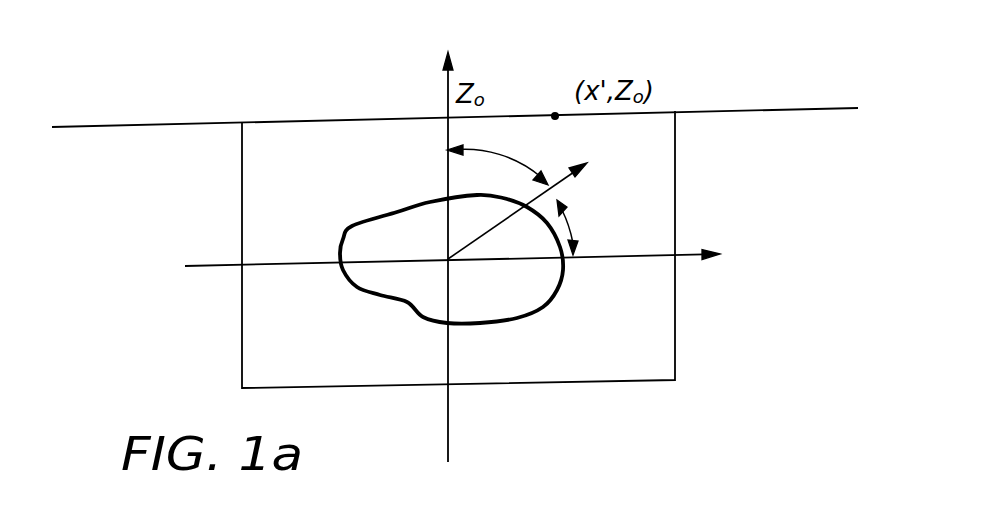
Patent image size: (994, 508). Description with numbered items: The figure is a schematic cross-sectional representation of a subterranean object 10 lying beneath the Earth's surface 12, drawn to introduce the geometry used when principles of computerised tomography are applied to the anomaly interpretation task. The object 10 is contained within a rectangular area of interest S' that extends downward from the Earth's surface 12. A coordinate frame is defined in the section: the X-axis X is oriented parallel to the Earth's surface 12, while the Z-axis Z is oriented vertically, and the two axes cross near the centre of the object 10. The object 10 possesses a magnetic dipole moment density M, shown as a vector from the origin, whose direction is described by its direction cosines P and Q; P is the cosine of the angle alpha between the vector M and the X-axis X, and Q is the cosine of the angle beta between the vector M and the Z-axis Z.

The object 10 is at (537, 312).
The Earth's surface 12 is at (702, 107).
The area of interest S' is at (458, 249).
The magnetic dipole moment density M is at (533, 200).
The Z-axis Z is at (440, 239).
The X-axis X is at (456, 236).